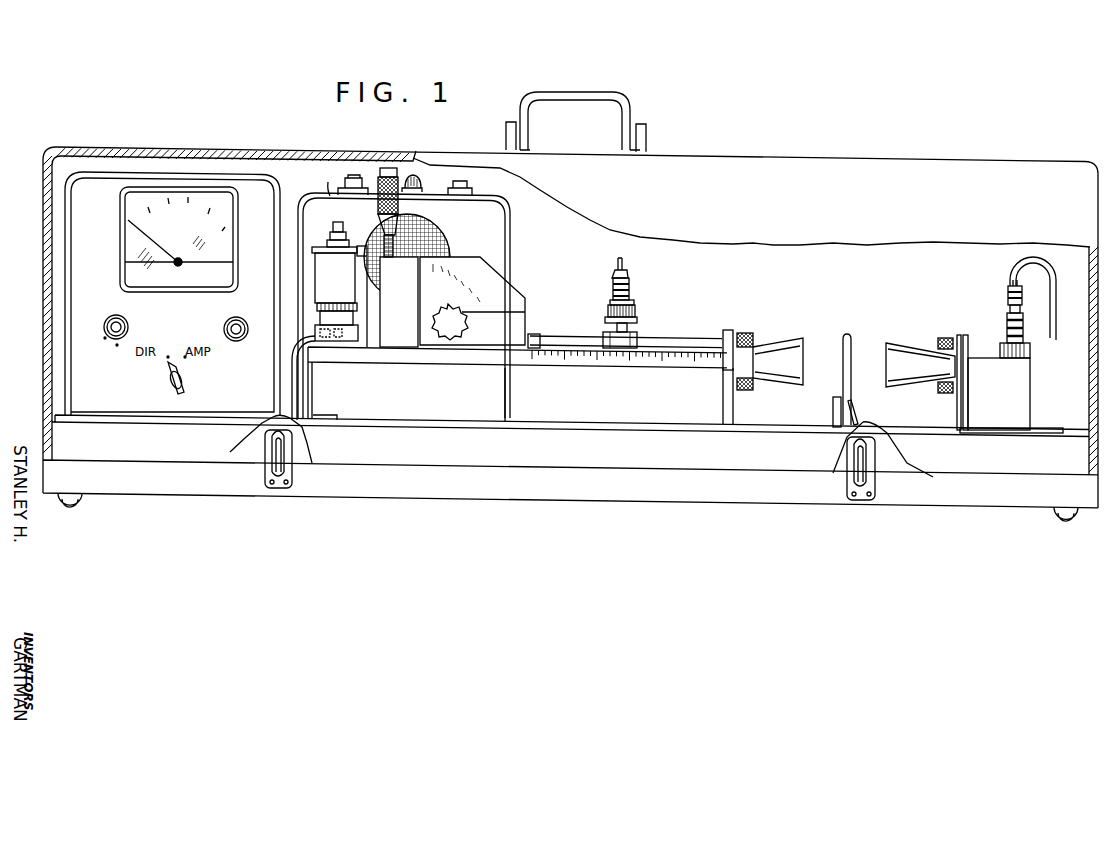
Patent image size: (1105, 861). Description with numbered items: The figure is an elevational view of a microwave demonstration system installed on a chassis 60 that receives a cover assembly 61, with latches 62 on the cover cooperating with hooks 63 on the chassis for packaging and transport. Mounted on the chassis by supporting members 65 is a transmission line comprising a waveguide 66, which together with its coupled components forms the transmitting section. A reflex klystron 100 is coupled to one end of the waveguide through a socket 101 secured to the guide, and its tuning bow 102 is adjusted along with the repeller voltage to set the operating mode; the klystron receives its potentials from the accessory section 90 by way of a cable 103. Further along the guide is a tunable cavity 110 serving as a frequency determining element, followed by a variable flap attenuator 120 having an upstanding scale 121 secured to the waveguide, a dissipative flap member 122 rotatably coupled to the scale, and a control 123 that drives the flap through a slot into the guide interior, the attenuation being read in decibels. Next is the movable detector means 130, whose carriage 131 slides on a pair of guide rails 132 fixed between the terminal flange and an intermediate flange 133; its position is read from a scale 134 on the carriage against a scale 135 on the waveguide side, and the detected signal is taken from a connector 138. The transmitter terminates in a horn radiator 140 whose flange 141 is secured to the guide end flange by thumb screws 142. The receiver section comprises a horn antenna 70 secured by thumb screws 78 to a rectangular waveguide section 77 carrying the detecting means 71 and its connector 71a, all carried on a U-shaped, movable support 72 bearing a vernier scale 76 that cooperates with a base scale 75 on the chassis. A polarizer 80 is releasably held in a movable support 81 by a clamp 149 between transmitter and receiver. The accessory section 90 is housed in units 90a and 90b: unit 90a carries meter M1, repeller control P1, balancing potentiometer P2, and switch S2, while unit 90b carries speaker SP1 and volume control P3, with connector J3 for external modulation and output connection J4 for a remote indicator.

The chassis 60 is at (367, 460).
The cover assembly 61 is at (166, 150).
The latches 62 is at (280, 450).
The hooks 63 is at (292, 478).
The supporting members 65 is at (312, 384).
The waveguide 66 is at (432, 375).
The horn antenna 70 is at (900, 381).
The detecting means 71 is at (1006, 307).
The connector 71a is at (1010, 298).
The support 72 is at (960, 410).
The base scale 75 is at (1040, 432).
The vernier scale 76 is at (997, 424).
The rectangular waveguide section 77 is at (975, 363).
The thumb screws 78 is at (940, 387).
The polarizer 80 is at (851, 341).
The movable support 81 is at (833, 410).
The accessory section 90 is at (296, 187).
The accessory unit 90a is at (76, 226).
The accessory unit 90b is at (318, 180).
The klystron 100 is at (350, 295).
The socket 101 is at (348, 343).
The tuning bow 102 is at (314, 272).
The cable 103 is at (300, 380).
The tunable cavity 110 is at (398, 312).
The variable flap attenuator 120 is at (504, 300).
The upstanding scale 121 is at (528, 300).
The dissipative flap member 122 is at (520, 318).
The control 123 is at (460, 331).
The movable detector means 130 is at (649, 292).
The carriage 131 is at (632, 325).
The guide rails 132 is at (663, 342).
The intermediate flange 133 is at (540, 337).
The scale 134 is at (630, 348).
The scale 135 is at (563, 364).
The connector 138 is at (623, 274).
The horn radiator 140 is at (808, 327).
The flange 141 is at (733, 332).
The thumb screws 142 is at (741, 333).
The lever 149 is at (853, 414).
The meter M1 is at (238, 256).
The control P1 is at (126, 322).
The potentiometer P2 is at (225, 327).
The volume control potentiometer P3 is at (420, 181).
The switch S2 is at (168, 383).
The connector J3 is at (352, 176).
The output connection J4 is at (473, 186).
The speaker SP1 is at (432, 240).